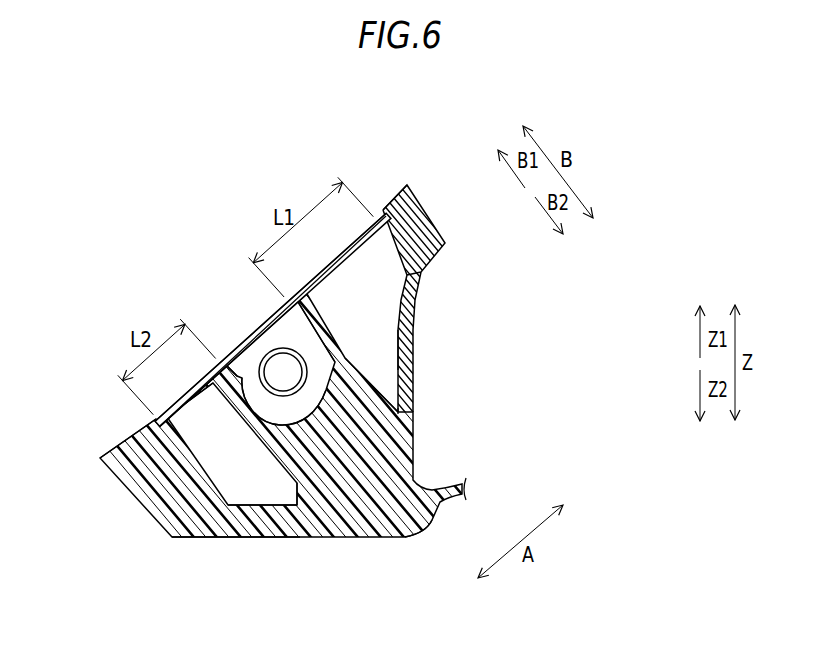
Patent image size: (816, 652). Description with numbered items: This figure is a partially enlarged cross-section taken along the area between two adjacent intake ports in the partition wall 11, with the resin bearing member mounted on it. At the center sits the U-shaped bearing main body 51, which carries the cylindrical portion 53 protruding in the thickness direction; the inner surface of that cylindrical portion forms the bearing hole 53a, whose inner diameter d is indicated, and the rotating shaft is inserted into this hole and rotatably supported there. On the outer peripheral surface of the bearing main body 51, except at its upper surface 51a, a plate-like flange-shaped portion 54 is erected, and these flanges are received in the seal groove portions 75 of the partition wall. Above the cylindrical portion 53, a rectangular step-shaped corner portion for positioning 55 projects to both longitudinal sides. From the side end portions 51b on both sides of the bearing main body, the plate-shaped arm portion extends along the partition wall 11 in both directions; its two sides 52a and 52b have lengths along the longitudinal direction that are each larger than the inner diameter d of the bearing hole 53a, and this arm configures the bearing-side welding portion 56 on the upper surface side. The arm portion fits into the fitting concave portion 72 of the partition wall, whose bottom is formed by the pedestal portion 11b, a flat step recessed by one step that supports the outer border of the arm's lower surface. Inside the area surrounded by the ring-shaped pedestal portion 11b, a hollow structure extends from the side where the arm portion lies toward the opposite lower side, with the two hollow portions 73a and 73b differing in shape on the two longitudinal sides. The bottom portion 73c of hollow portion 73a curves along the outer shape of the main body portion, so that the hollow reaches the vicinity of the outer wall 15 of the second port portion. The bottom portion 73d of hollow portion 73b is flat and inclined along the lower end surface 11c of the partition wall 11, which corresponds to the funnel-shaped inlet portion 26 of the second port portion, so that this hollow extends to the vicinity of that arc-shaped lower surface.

The partition wall 11 is at (375, 455).
The pedestal portion 11b is at (148, 414).
The lower end surface 11c is at (233, 538).
The outer wall 15 is at (415, 352).
The inlet portion 26 is at (370, 542).
The bearing main body 51 is at (226, 361).
The upper surface 51a is at (253, 352).
The side end portions 51b is at (292, 322).
The arm portion side 52a is at (357, 248).
The arm portion side 52b is at (186, 393).
The cylindrical portion 53 is at (320, 405).
The bearing hole 53a is at (250, 335).
The flange-shaped portion 54 is at (291, 430).
The corner portion for positioning 55 is at (262, 330).
The bearing-side welding portion 56 is at (218, 356).
The fitting concave portion 72 is at (192, 423).
The hollow portion 73a is at (384, 314).
The hollow portion 73b is at (235, 470).
The bottom portion 73c is at (400, 356).
The bottom portion 73d is at (258, 506).
The seal groove portions 75 is at (401, 418).
The inner diameter d is at (298, 357).